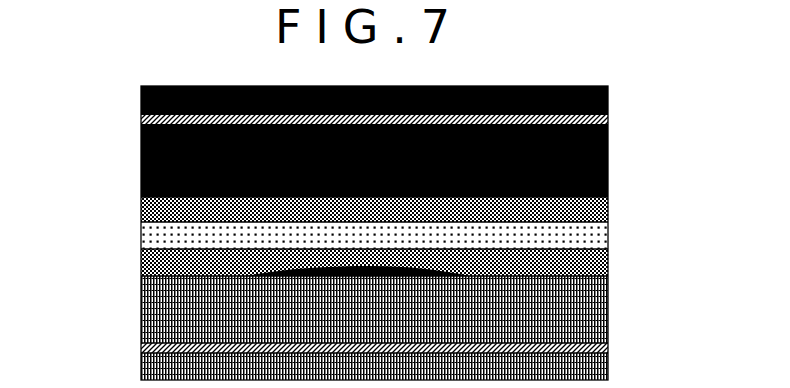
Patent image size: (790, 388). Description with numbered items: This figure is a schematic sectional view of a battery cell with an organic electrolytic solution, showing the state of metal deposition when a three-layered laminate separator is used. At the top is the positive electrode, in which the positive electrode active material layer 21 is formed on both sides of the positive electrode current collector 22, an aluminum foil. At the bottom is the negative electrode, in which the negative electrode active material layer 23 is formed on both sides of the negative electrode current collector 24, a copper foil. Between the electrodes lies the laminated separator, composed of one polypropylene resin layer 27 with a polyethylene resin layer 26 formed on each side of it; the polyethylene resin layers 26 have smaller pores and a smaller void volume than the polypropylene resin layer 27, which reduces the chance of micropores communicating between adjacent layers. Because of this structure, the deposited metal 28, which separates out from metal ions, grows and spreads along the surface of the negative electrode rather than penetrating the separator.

The active material layer for positive electrode 21 is at (608, 98).
The current collector for positive electrode 22 is at (141, 119).
The active material layer for negative electrode 23 is at (595, 302).
The current collector for negative electrode 24 is at (141, 346).
The polyethylene resin layer 26 is at (141, 259).
The polypropylene resin layer 27 is at (608, 232).
The deposited metal 28 is at (430, 265).